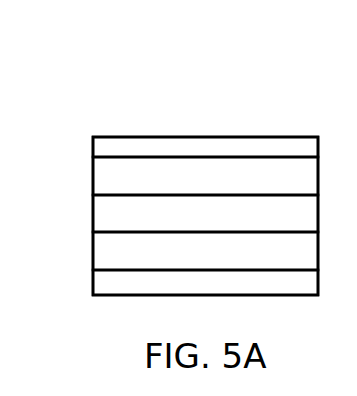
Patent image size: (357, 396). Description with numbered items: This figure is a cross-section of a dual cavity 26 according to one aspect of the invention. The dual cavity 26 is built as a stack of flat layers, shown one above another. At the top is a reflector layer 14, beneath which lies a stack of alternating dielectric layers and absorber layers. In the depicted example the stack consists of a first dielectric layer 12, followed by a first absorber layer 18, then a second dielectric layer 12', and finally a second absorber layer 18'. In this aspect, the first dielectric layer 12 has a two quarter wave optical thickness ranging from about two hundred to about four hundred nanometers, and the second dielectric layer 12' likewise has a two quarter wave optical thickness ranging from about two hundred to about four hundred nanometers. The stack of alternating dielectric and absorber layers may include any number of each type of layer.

The dual cavity 26 is at (172, 60).
The reflector layer 14 is at (93, 149).
The first dielectric layer 12 is at (177, 176).
The first absorber layer 18 is at (177, 214).
The second dielectric layer 12' is at (177, 251).
The second absorber layer 18' is at (177, 284).